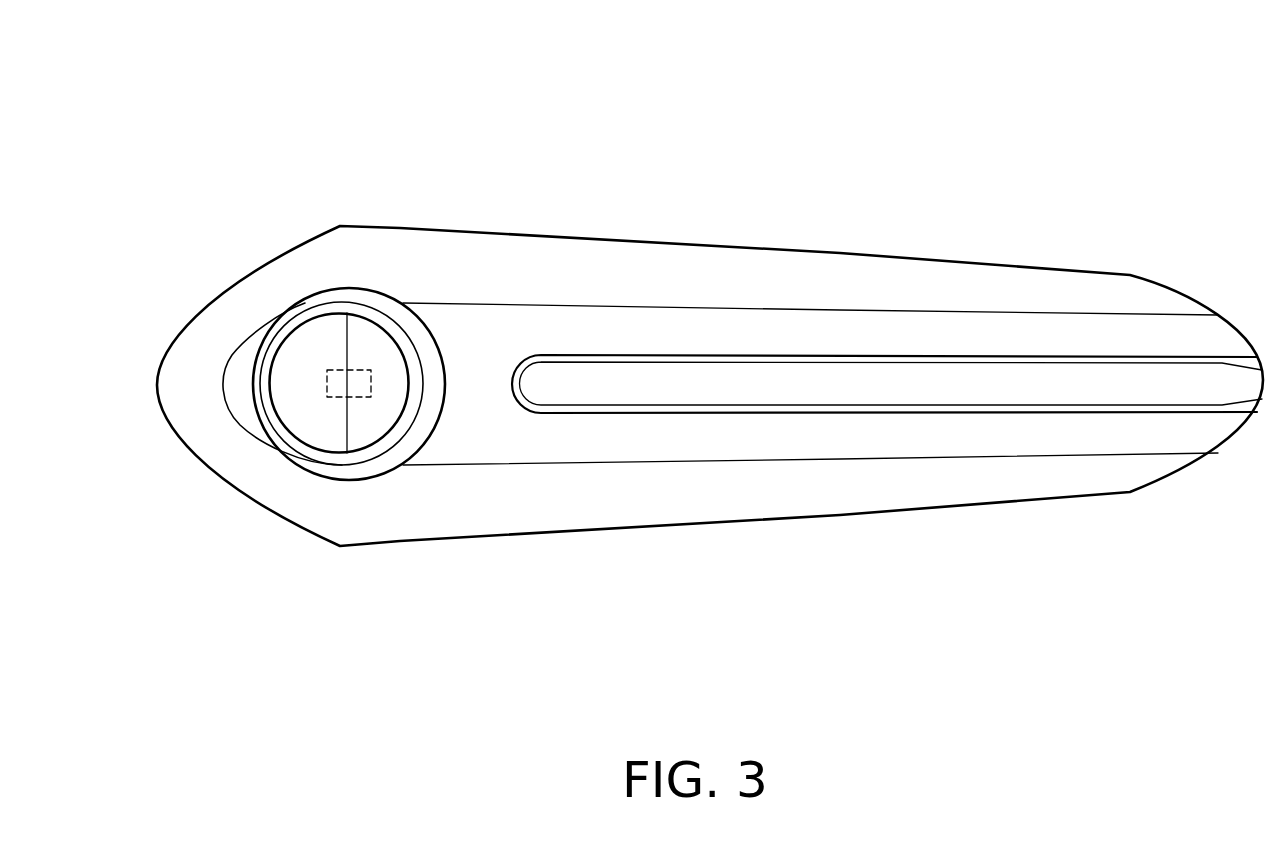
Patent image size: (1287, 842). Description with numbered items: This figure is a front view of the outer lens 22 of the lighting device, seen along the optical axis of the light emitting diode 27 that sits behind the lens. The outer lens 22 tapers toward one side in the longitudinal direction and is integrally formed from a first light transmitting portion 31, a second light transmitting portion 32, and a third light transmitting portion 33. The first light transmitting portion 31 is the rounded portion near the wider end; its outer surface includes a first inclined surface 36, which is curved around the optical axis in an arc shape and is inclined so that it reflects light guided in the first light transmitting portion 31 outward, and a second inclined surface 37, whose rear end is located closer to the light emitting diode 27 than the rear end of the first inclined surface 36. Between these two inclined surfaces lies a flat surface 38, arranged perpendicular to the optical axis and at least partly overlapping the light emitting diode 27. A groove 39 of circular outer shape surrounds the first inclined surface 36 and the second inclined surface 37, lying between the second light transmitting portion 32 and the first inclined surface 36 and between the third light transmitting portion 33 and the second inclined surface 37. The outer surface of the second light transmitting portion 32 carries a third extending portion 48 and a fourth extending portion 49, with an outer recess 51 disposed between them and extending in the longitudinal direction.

The outer lens 22 is at (902, 136).
The light emitting diode 27 is at (360, 370).
The first light transmitting portion 31 is at (326, 335).
The second light transmitting portion 32 is at (630, 328).
The third light transmitting portion 33 is at (247, 463).
The first inclined surface 36 is at (410, 398).
The second inclined surface 37 is at (303, 362).
The flat surface 38 is at (371, 415).
The groove 39 is at (430, 348).
The third extending portion 48 is at (742, 437).
The fourth extending portion 49 is at (735, 333).
The outer recess 51 is at (862, 390).